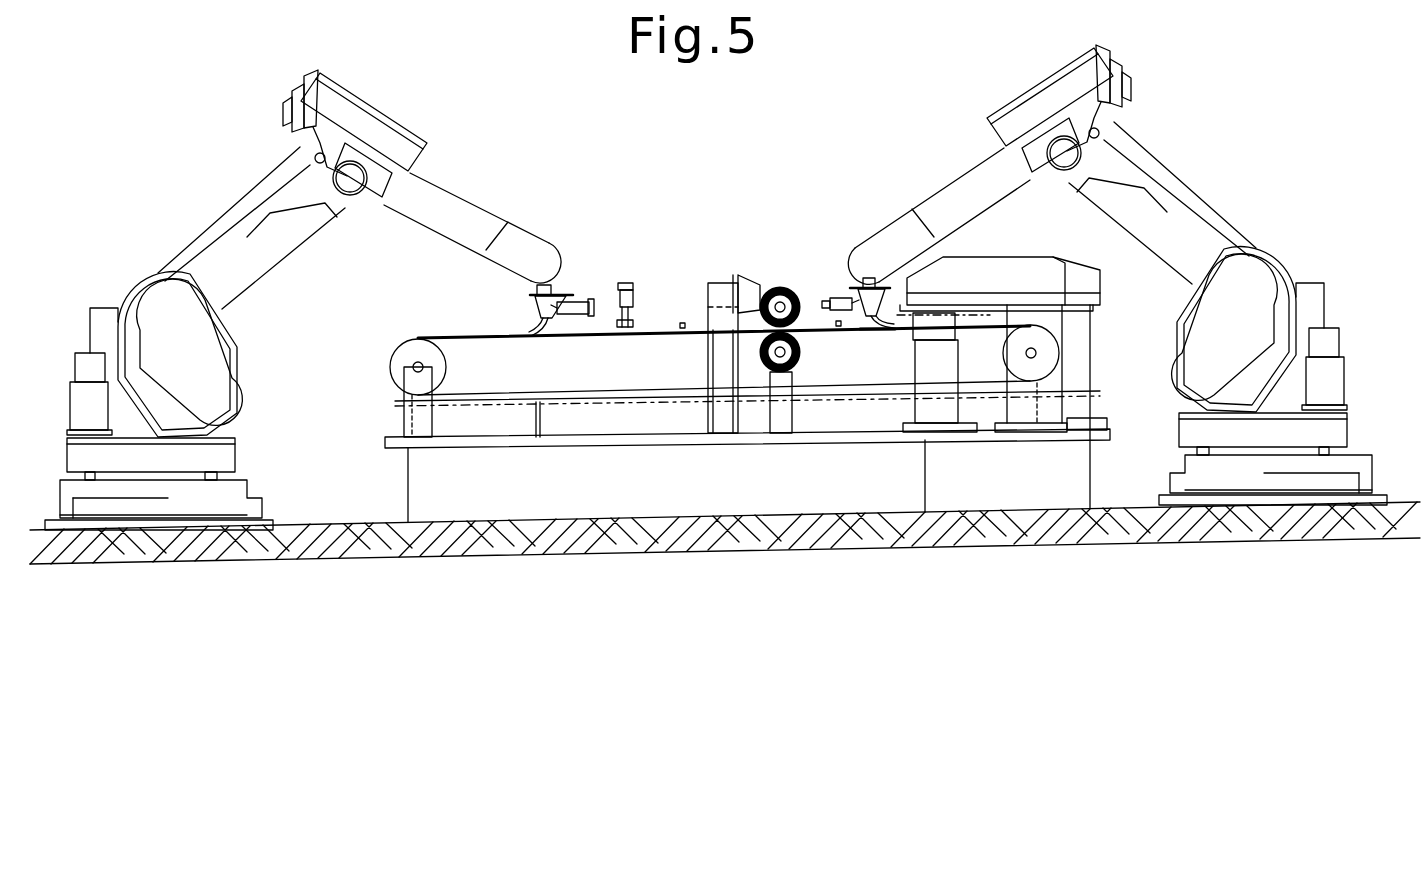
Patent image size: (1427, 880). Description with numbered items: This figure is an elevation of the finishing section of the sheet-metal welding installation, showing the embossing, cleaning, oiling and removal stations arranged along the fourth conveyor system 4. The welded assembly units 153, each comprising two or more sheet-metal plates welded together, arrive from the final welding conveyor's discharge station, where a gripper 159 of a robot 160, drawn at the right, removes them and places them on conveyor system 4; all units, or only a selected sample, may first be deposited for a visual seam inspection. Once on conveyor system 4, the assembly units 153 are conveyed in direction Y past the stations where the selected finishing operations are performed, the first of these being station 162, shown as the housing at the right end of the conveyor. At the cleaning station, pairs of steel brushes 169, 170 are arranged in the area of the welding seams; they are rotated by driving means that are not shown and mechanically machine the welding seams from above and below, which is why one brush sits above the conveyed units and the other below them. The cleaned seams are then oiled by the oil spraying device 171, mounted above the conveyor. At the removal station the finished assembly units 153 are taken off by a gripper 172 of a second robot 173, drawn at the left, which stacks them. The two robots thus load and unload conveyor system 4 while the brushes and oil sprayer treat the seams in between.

The conveyor system 4 is at (790, 556).
The assembly unit 153 is at (472, 330).
The gripper 159 is at (867, 280).
The robot 160 is at (1382, 340).
The station 162 is at (942, 262).
The steel brush 169 is at (780, 288).
The steel brush 170 is at (760, 347).
The oil spraying device 171 is at (632, 292).
The gripper 172 is at (560, 297).
The robot 173 is at (223, 194).